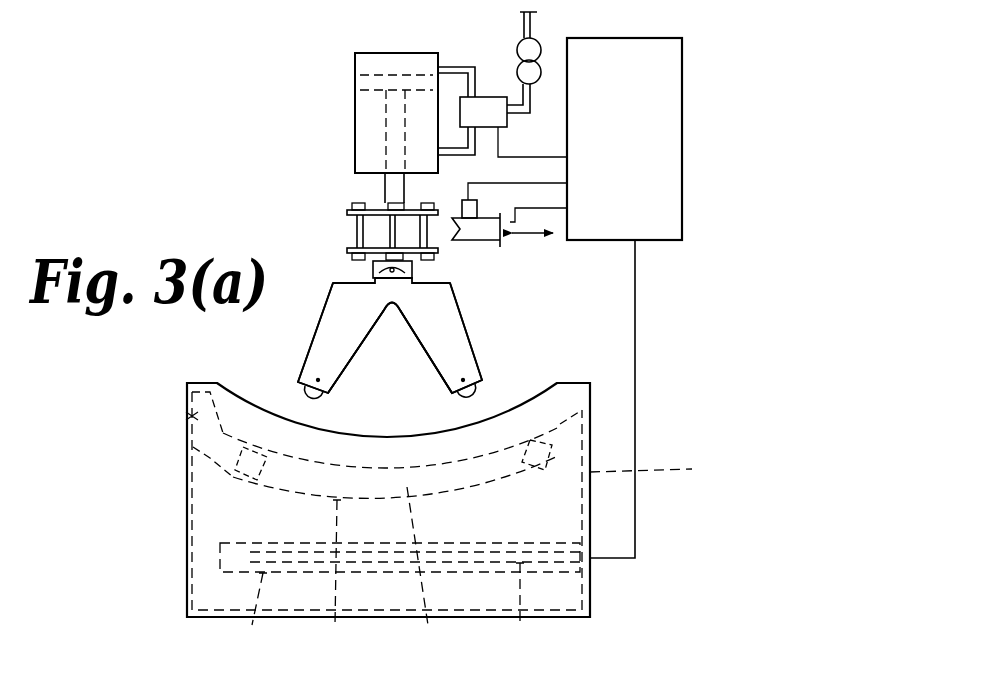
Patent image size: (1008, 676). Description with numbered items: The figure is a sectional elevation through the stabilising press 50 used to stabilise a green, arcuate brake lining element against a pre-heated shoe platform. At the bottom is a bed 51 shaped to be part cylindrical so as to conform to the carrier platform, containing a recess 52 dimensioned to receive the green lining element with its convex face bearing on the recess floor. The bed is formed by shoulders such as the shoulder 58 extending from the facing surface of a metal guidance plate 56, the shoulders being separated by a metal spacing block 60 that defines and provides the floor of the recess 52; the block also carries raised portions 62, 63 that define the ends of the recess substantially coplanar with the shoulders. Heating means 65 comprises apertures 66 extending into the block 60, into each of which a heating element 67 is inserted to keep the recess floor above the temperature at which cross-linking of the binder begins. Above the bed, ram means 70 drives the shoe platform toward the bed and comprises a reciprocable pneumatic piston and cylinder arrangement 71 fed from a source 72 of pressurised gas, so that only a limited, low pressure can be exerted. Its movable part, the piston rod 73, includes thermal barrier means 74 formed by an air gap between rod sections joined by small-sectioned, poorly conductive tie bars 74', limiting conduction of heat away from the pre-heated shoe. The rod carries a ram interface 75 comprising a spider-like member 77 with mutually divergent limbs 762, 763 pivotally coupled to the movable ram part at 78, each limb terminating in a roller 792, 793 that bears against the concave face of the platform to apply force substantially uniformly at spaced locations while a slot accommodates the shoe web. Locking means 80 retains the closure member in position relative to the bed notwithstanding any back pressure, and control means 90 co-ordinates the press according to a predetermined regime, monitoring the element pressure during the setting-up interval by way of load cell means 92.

The stabilising press 50 is at (250, 200).
The bed 51 is at (341, 578).
The recess 52 is at (430, 571).
The guidance plate 56 is at (200, 406).
The shoulder 58 is at (188, 393).
The spacing block 60 is at (215, 527).
The raised portion 62 is at (233, 475).
The raised portion 63 is at (661, 469).
The heating means 65 is at (600, 570).
The aperture 66 is at (250, 614).
The heating element 67 is at (523, 609).
The ram means 70 is at (328, 101).
The pneumatic piston and cylinder arrangement 71 is at (362, 63).
The source of pressurised gas 72 is at (541, 43).
The piston rod 73 is at (385, 183).
The thermal barrier means 74 is at (360, 218).
The tie bars 74' is at (365, 248).
The ram interface 75 is at (319, 331).
The limb 762 is at (483, 345).
The limb 763 is at (313, 356).
The spider-like member 77 is at (418, 340).
The pivotal coupling 78 is at (404, 270).
The roller 792 is at (464, 395).
The roller 793 is at (316, 398).
The locking means 80 is at (501, 237).
The control means 90 is at (675, 222).
The load cell means 92 is at (471, 208).